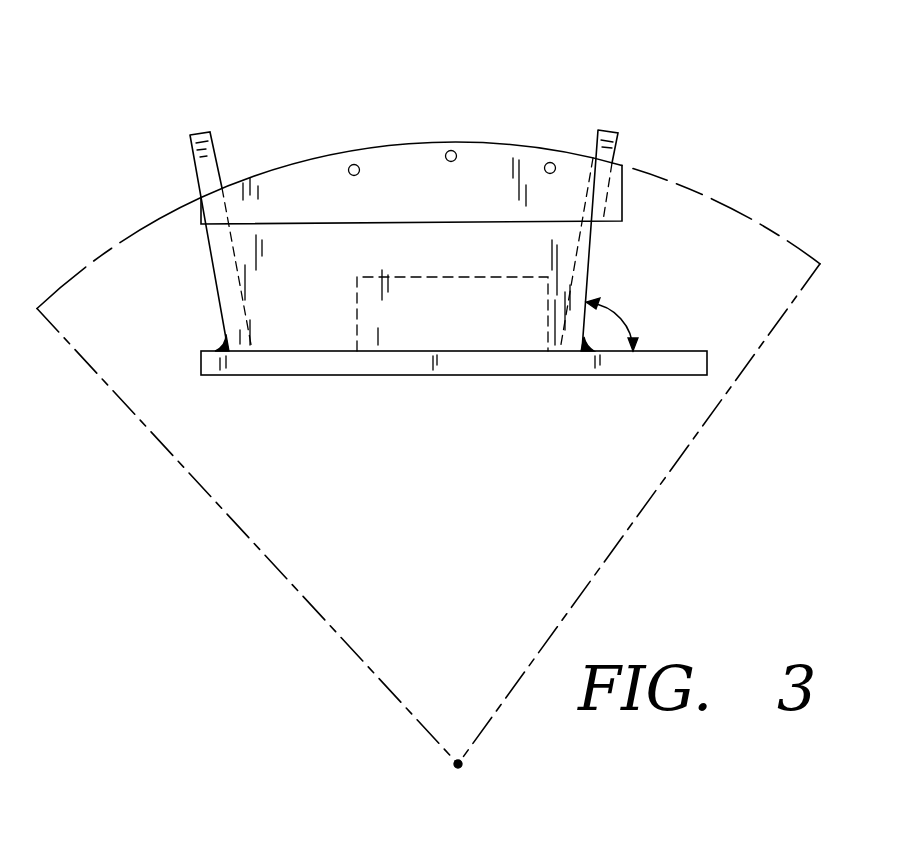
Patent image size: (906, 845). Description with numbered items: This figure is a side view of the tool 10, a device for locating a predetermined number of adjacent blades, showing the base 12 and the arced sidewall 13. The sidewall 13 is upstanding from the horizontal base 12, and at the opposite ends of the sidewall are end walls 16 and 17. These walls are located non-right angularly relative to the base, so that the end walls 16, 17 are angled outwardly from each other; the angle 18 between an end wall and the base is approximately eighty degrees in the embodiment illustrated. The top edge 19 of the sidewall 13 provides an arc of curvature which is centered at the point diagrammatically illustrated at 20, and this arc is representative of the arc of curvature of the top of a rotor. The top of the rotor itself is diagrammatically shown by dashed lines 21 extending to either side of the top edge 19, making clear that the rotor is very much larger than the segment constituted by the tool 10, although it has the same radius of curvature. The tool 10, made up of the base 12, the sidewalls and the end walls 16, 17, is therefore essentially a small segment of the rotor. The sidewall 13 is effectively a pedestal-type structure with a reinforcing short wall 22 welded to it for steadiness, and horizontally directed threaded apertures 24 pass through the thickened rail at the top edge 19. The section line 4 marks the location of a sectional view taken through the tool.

The section line 4- 4 is at (450, 98).
The tool 10 is at (642, 153).
The base 12 is at (345, 376).
The sidewall 13 is at (430, 209).
The end wall 16 is at (188, 156).
The end wall 17 is at (620, 143).
The angle 18 is at (630, 318).
The top edge 19 is at (418, 138).
The center of arc of curvature 20 is at (458, 770).
The dashed lines 21 is at (87, 266).
The reinforcing short wall 22 is at (357, 317).
The threaded apertures 24 is at (349, 166).